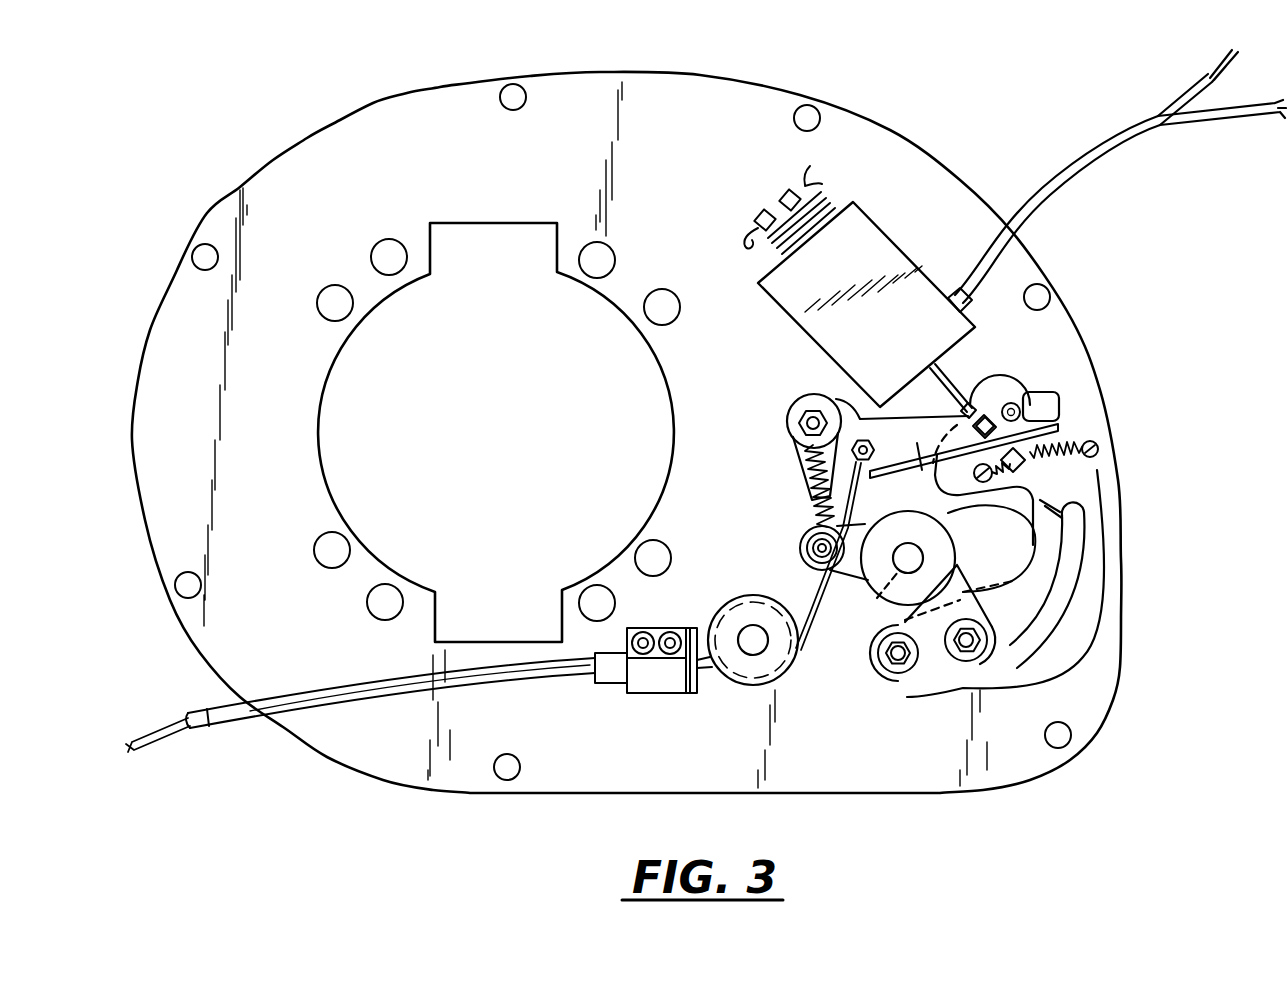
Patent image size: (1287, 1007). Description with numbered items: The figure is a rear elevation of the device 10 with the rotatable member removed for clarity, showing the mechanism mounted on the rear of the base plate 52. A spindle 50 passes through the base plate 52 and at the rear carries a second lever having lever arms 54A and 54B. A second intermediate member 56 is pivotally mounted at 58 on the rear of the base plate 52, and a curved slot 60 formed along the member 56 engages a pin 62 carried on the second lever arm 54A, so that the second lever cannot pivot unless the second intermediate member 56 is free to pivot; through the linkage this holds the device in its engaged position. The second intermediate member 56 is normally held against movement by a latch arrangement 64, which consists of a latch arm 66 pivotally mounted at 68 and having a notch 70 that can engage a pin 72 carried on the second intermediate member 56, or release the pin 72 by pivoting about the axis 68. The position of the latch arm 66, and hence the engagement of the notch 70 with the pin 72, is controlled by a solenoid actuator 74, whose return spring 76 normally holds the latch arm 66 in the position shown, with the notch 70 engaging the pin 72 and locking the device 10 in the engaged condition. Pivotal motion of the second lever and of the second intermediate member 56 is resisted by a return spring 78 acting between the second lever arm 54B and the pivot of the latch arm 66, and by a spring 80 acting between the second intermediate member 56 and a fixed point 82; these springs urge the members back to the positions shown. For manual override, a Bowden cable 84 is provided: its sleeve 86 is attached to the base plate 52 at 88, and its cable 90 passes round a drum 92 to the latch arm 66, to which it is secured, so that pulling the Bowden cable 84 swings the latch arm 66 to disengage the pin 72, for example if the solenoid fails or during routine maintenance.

The device 10 is at (786, 75).
The spindle 50 is at (912, 556).
The base plate 52 is at (627, 432).
The lever arm 54A is at (963, 592).
The lever arm 54B is at (797, 554).
The second intermediate member 56 is at (1077, 492).
The pivot 58 is at (898, 660).
The curved slot 60 is at (1050, 615).
The pin 62 is at (970, 643).
The latch arrangement 64 is at (1062, 371).
The latch arm 66 is at (955, 464).
The pivot axis 68 is at (812, 425).
The notch 70 is at (1063, 425).
The pin 72 is at (1011, 403).
The solenoid actuator 74 is at (903, 253).
The return spring 76 is at (827, 212).
The return spring 78 is at (817, 503).
The spring 80 is at (1030, 450).
The fixed point 82 is at (1097, 446).
The Bowden cable 84 is at (322, 657).
The sleeve 86 is at (342, 685).
The attachment point 88 is at (652, 687).
The cable 90 is at (813, 613).
The drum 92 is at (753, 668).